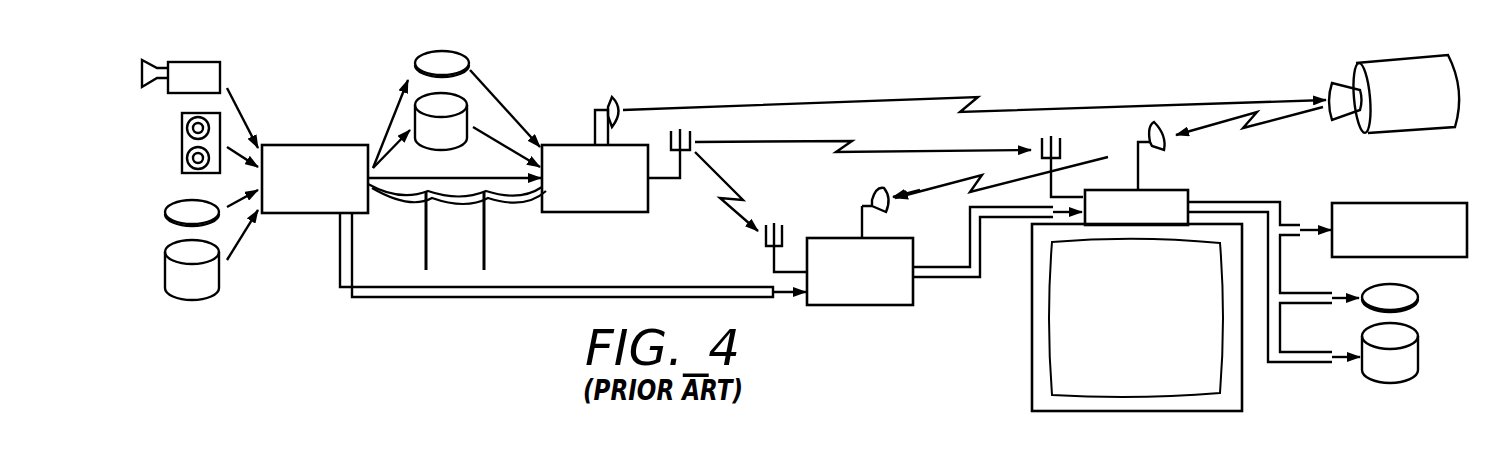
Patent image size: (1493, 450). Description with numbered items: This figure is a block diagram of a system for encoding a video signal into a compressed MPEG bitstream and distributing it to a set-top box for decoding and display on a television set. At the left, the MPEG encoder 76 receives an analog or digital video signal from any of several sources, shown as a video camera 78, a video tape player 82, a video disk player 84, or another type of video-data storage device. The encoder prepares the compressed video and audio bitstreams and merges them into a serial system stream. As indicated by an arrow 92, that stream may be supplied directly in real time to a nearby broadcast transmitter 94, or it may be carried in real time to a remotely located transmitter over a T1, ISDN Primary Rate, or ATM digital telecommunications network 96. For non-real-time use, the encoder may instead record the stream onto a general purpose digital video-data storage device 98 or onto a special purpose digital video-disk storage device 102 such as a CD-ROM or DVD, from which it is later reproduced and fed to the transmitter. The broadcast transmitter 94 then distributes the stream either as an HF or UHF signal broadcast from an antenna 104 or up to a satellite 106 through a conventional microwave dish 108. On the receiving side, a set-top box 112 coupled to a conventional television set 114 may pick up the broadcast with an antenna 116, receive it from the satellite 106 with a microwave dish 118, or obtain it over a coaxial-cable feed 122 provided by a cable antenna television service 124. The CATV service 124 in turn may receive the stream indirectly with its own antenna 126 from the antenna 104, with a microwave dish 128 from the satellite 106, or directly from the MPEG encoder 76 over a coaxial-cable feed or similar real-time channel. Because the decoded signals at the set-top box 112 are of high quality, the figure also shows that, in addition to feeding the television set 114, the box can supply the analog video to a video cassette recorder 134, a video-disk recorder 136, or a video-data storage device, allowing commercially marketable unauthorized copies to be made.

The video camera 78 is at (225, 72).
The MPEG encoder 76 is at (318, 145).
The video tape player 82 is at (182, 147).
The video disk player 84 is at (165, 212).
The arrow 92 is at (438, 177).
The digital telecommunications network 96 is at (487, 223).
The general purpose digital video-data storage-device 98 is at (452, 138).
The special purpose digital video-disk storage-device 102 is at (457, 62).
The broadcast transmitter 94 is at (595, 212).
The microwave dish 108 is at (595, 118).
The antenna 104 is at (690, 170).
The antenna 126 is at (787, 233).
The microwave dish 128 is at (860, 217).
The cable antenna television service 124 is at (915, 252).
The coaxial-cable feed 122 is at (978, 252).
The antenna 116 is at (1060, 153).
The microwave dish 118 is at (1160, 150).
The set-top box 112 is at (1192, 193).
The television set 114 is at (1032, 367).
The video cassette recorder 134 is at (1377, 203).
The video-disk recorder 136 is at (1407, 297).
The satellite 106 is at (1403, 117).